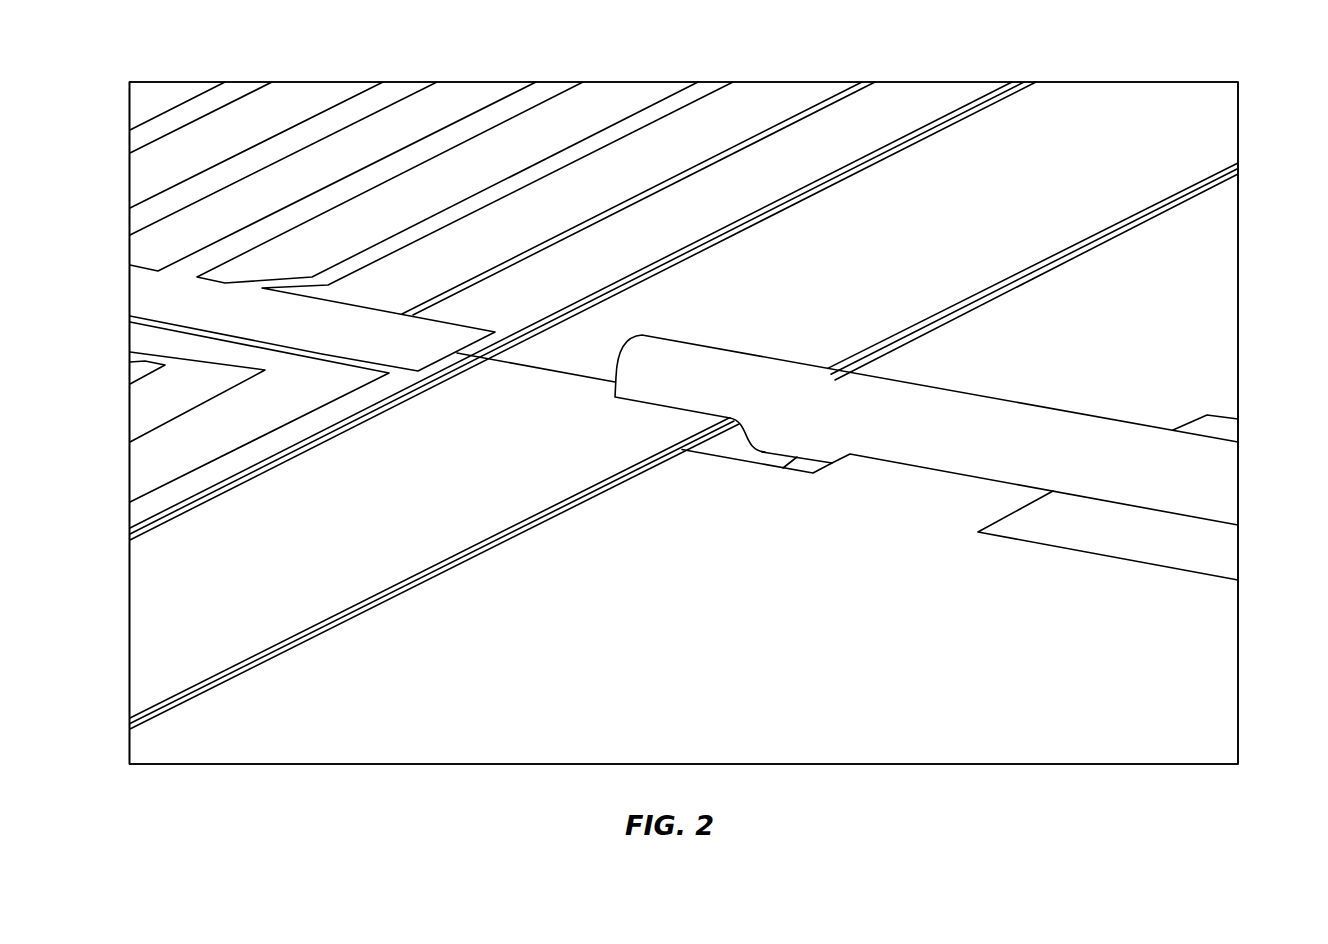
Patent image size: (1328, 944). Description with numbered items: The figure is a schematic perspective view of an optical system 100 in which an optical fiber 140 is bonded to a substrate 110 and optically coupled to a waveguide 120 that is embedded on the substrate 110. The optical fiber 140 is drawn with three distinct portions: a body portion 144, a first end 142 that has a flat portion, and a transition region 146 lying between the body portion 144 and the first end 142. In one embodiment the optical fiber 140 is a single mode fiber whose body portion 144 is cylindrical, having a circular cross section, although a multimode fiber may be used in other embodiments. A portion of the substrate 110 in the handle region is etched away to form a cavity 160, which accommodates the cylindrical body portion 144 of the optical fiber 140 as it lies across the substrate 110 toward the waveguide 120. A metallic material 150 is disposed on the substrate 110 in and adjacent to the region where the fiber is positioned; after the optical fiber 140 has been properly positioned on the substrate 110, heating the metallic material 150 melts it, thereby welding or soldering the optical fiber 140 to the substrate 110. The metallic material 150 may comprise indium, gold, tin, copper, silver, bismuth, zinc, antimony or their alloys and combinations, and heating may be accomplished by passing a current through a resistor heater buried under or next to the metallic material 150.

The optical system 100 is at (434, 74).
The substrate 110 is at (1213, 297).
The waveguide 120 is at (530, 370).
The optical fiber 140 is at (926, 457).
The first end 142 is at (695, 363).
The body portion 144 is at (1150, 467).
The transition region 146 is at (733, 427).
The metallic material 150 is at (1102, 542).
The cavity 160 is at (755, 455).